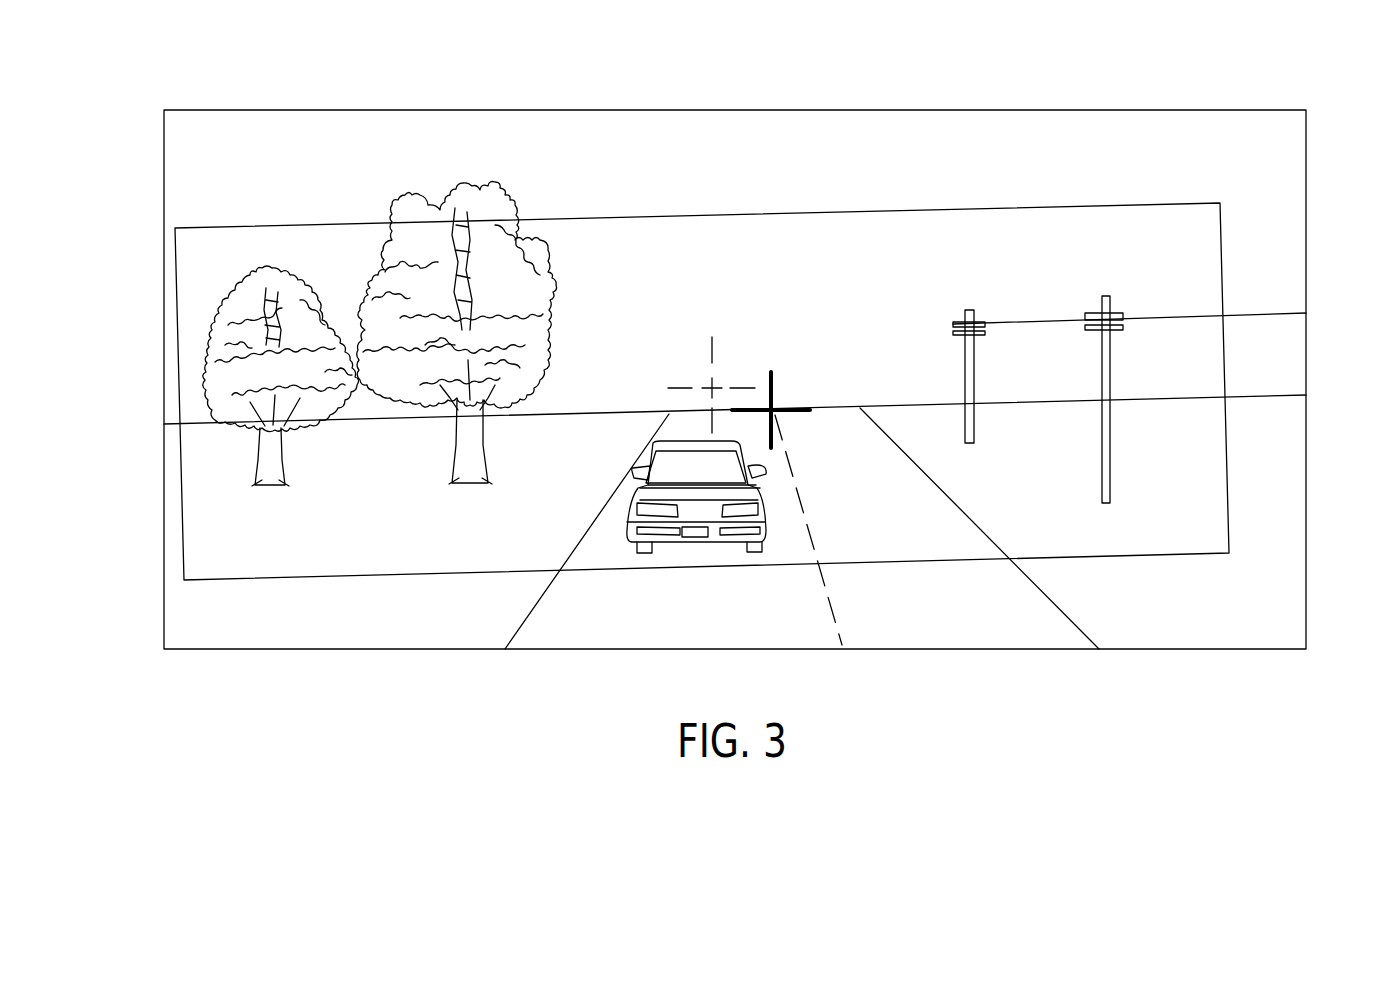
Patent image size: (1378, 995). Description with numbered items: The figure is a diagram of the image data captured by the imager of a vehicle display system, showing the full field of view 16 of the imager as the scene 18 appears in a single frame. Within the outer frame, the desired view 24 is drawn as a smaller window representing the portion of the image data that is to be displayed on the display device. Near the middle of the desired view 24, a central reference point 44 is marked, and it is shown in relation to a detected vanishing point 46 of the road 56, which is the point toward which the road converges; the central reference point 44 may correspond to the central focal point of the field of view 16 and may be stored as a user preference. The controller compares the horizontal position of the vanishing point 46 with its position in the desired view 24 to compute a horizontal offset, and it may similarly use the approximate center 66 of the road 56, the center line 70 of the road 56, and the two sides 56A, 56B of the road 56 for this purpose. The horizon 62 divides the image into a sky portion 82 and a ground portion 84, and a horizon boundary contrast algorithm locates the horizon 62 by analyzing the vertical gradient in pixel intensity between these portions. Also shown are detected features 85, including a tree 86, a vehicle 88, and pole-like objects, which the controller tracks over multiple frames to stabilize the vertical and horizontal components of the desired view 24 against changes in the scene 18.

The field of view 16 is at (922, 110).
The scene 18 is at (1232, 133).
The desired view 24 is at (1222, 267).
The horizon 62 is at (1138, 398).
The sky portion 82 is at (782, 273).
The ground portion 84 is at (382, 527).
The features 85 is at (965, 350).
The tree 86 is at (420, 222).
The vehicle 88 is at (632, 488).
The central reference point 44 is at (716, 384).
The vanishing point 46 is at (778, 400).
The road 56 is at (918, 616).
The side of the road 56A is at (592, 517).
The side of the road 56B is at (962, 507).
The center line 70 is at (806, 517).
The approximate center 66 is at (695, 627).